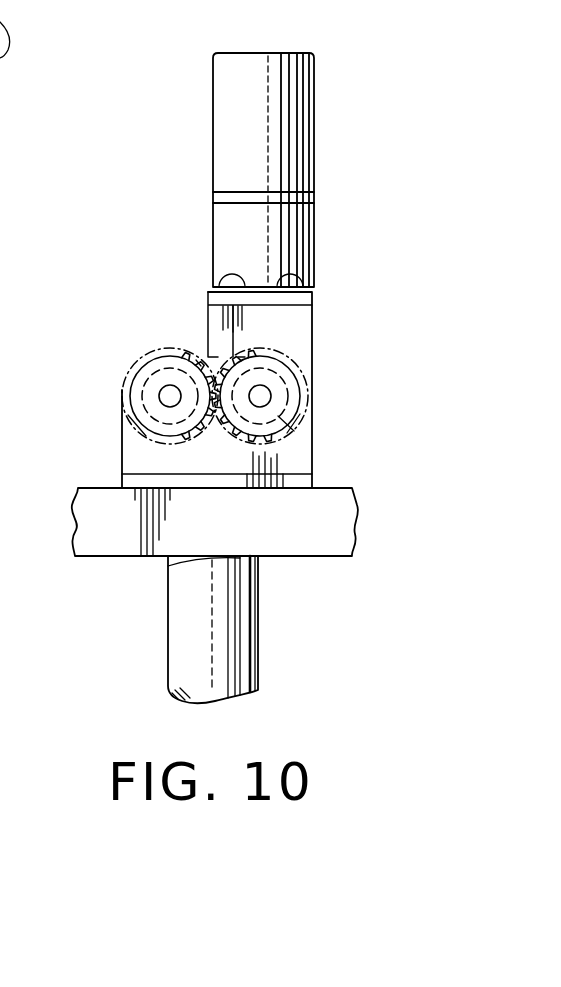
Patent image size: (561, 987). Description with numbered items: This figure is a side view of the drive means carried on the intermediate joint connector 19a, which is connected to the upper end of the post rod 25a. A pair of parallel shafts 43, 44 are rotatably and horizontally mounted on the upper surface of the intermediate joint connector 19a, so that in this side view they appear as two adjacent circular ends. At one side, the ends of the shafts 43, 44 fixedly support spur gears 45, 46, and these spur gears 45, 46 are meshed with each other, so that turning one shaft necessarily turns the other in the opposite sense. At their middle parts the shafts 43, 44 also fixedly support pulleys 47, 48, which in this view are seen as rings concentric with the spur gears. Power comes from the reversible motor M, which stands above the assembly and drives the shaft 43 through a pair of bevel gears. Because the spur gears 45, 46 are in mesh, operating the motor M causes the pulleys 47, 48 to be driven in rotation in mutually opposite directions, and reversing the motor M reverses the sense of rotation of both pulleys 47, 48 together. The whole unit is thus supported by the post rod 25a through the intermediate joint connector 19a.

The reversible motor M is at (258, 68).
The shaft 43 is at (271, 393).
The shaft 44 is at (159, 397).
The spur gear 45 is at (240, 357).
The spur gear 46 is at (198, 358).
The pulley 47 is at (303, 447).
The pulley 48 is at (146, 436).
The intermediate joint connector 19a is at (90, 533).
The post rod 25a is at (260, 627).